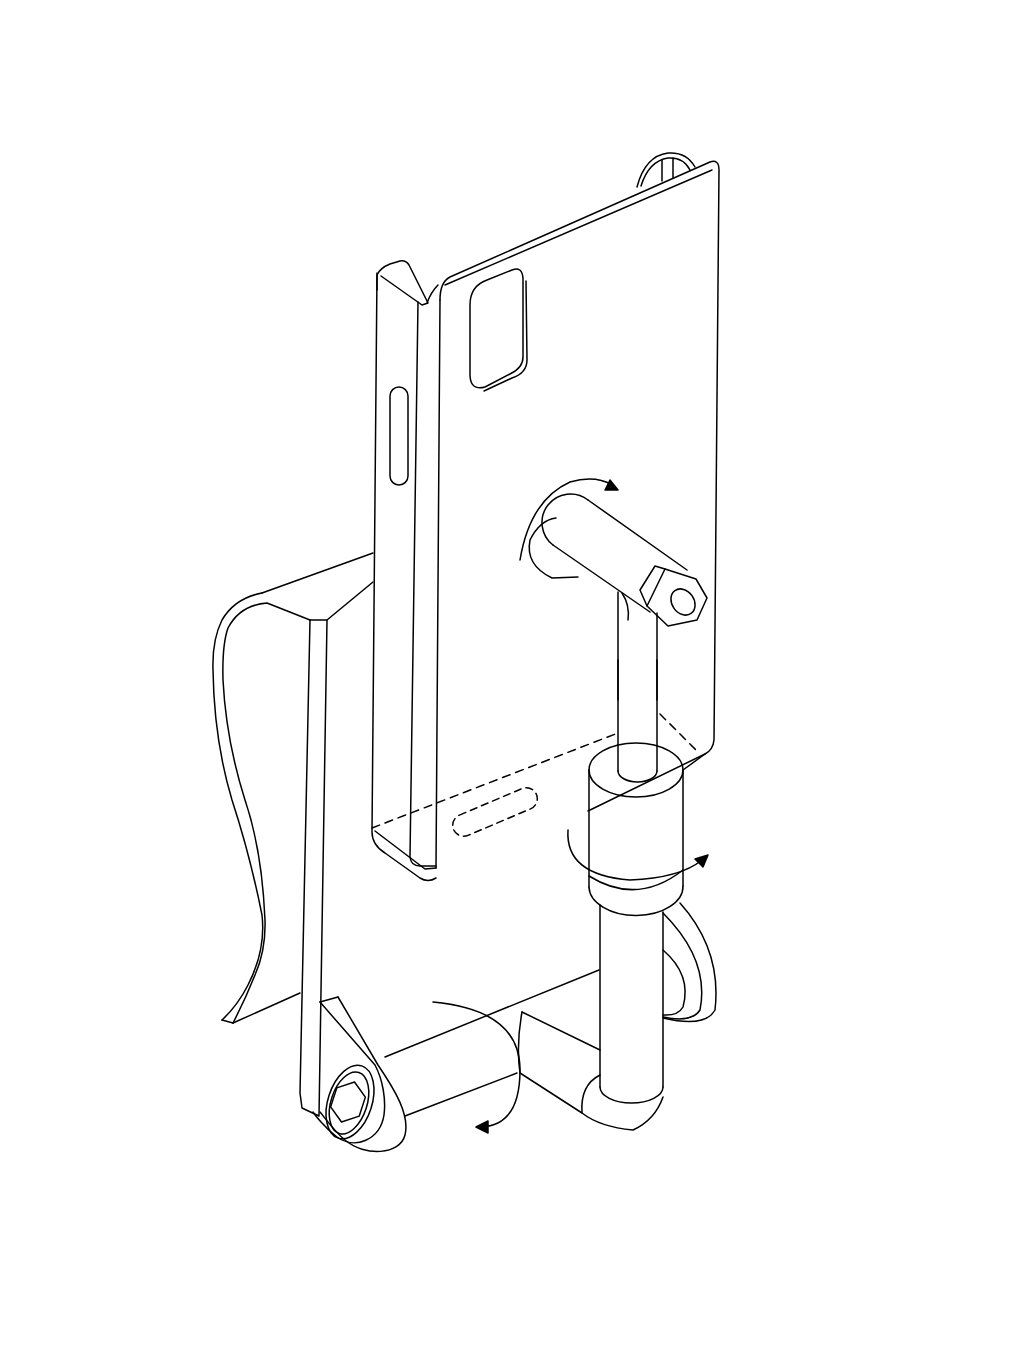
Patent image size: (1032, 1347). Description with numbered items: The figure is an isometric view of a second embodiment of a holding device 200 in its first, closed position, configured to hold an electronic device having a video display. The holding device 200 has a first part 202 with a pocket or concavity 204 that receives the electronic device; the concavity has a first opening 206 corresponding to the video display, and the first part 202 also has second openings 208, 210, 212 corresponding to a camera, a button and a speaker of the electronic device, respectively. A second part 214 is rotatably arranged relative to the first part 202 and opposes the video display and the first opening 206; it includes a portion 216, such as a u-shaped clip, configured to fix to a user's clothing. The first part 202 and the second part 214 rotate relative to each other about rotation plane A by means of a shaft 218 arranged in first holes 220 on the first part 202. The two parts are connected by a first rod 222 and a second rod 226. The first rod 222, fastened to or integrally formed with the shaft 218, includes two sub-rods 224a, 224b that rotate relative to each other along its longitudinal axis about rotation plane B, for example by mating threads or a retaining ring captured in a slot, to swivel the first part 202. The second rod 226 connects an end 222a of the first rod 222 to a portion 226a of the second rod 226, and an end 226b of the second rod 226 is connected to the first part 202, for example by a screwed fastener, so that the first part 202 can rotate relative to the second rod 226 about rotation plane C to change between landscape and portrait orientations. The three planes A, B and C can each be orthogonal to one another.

The holding device 200 is at (757, 76).
The first part 202 is at (722, 330).
The concavity 204 is at (565, 190).
The first opening 206 is at (408, 268).
The second opening 208 is at (532, 335).
The second opening 210 is at (390, 400).
The second opening 212 is at (500, 838).
The second part 214 is at (156, 769).
The portion 216 is at (250, 874).
The shaft 218 is at (438, 1105).
The first holes 220 is at (320, 1092).
The first rod 222 is at (722, 801).
The end 222a is at (633, 607).
The sub-rod 224a is at (666, 1073).
The sub-rod 224b is at (658, 688).
The second rod 226 is at (665, 552).
The portion 226a is at (680, 563).
The end 226b is at (538, 522).